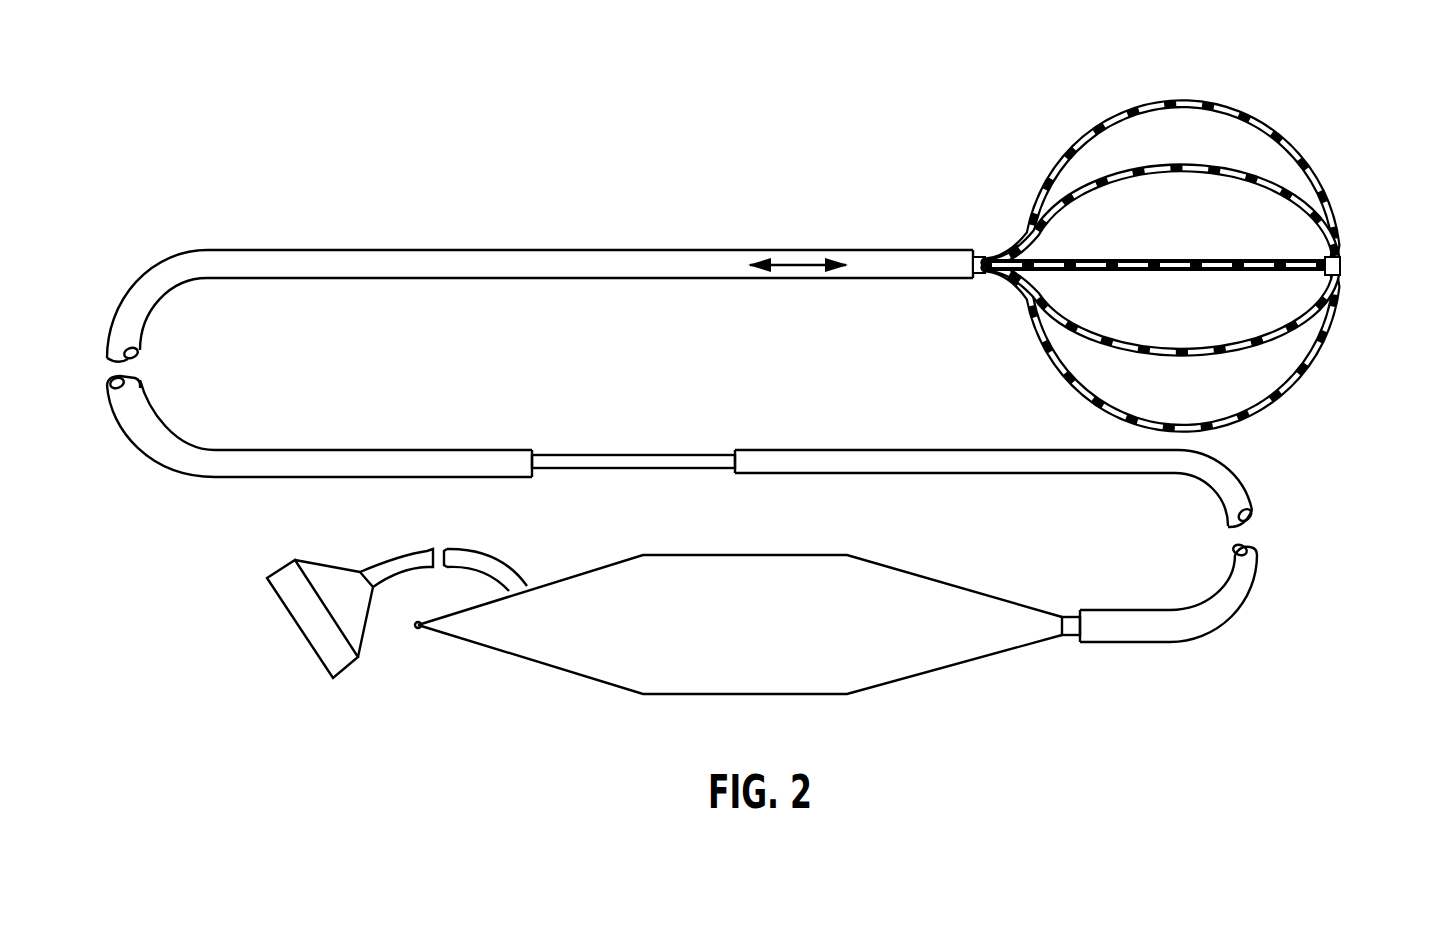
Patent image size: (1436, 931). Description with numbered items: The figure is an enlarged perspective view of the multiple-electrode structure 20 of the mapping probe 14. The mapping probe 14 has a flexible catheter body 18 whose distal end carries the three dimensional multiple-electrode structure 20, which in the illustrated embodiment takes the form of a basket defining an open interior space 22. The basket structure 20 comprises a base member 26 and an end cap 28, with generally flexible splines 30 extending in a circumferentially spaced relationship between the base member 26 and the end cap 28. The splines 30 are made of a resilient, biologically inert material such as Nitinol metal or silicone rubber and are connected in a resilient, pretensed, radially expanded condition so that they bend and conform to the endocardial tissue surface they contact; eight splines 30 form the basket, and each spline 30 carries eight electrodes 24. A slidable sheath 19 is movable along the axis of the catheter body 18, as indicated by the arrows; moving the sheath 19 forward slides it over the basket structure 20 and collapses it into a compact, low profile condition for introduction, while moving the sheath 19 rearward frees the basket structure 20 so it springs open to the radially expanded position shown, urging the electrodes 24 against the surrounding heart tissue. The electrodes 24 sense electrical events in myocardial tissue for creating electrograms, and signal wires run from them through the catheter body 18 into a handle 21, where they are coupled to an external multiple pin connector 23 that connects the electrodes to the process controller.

The mapping probe 14 is at (640, 135).
The flexible catheter body 18 is at (978, 255).
The slidable sheath 19 is at (800, 252).
The multiple-electrode structure 20 is at (1340, 190).
The handle 21 is at (902, 598).
The open interior space 22 is at (1258, 311).
The external multiple pin connector 23 is at (287, 582).
The electrodes 24 is at (1237, 118).
The base member 26 is at (988, 277).
The end cap 28 is at (1343, 268).
The splines 30 is at (1070, 158).